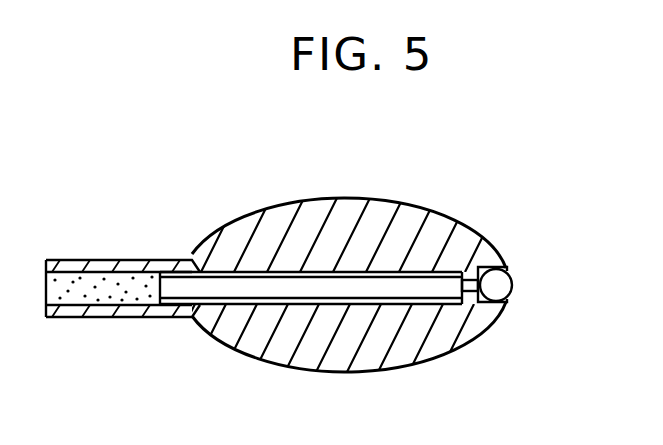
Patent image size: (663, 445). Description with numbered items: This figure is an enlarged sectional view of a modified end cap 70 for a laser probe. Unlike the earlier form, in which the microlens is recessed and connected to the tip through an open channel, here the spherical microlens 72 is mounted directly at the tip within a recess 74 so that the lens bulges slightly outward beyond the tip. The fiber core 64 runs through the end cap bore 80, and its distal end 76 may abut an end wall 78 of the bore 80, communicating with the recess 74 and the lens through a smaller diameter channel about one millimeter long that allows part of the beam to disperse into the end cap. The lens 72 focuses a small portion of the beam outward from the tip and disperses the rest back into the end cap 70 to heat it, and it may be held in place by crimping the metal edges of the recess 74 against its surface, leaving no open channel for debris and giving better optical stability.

The fiber core 64 is at (352, 292).
The end cap 70 is at (293, 370).
The spherical microlens 72 is at (512, 287).
The recess 74 is at (479, 303).
The distal end 76 is at (435, 304).
The end wall 78 is at (455, 266).
The end cap bore 80 is at (220, 272).